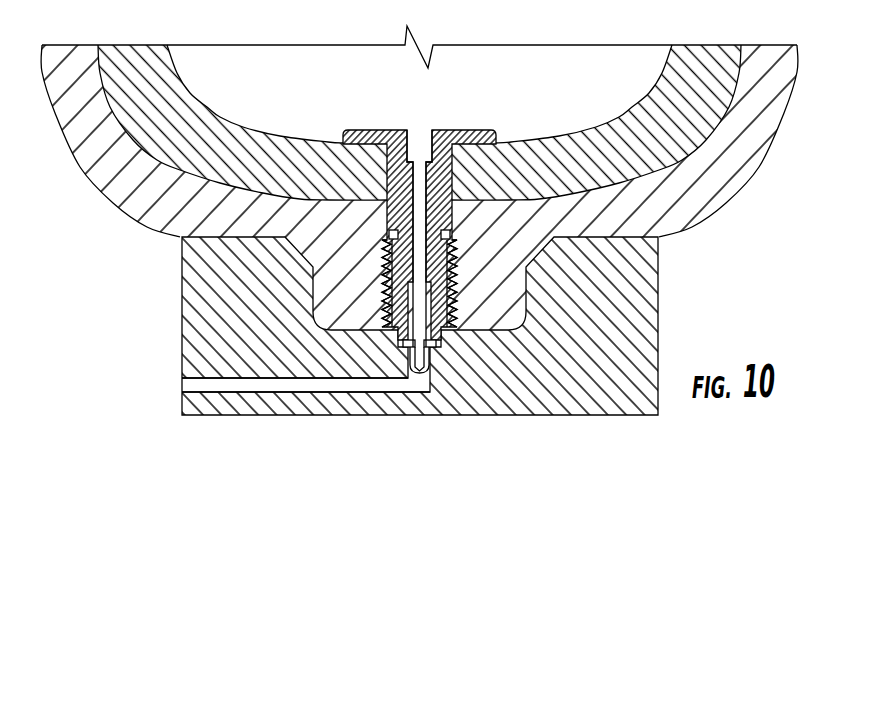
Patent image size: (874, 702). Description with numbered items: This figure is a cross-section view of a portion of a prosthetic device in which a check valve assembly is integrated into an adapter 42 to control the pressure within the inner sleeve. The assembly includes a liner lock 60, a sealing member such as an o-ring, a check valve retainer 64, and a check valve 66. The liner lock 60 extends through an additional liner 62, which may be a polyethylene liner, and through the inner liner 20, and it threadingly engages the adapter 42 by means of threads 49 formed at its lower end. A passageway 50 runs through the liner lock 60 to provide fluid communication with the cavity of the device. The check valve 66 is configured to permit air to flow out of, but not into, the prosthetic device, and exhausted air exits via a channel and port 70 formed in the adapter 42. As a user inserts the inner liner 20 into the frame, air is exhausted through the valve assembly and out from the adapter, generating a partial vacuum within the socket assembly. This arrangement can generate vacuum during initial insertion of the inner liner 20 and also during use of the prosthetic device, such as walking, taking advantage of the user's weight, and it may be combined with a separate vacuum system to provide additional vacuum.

The inner liner 20 is at (730, 187).
The adapter 42 is at (643, 298).
The thread 49 is at (383, 262).
The passageway 50 is at (419, 137).
The liner lock 60 is at (443, 137).
The additional liner 62 is at (580, 138).
The check valve retainer 64 is at (452, 312).
The check valve 66 is at (412, 377).
The channel and port 70 is at (190, 388).